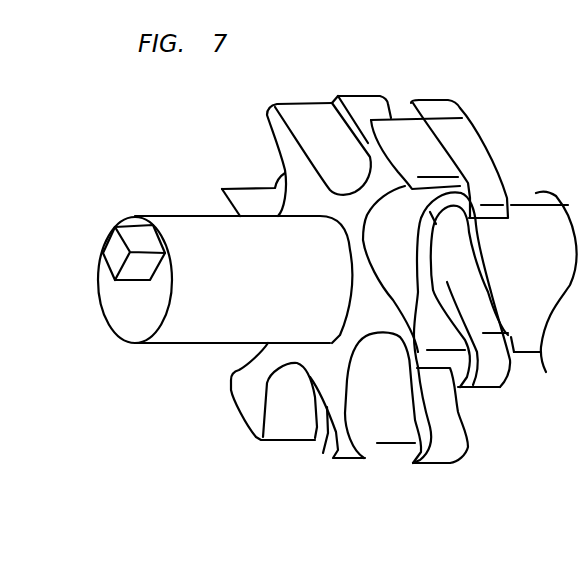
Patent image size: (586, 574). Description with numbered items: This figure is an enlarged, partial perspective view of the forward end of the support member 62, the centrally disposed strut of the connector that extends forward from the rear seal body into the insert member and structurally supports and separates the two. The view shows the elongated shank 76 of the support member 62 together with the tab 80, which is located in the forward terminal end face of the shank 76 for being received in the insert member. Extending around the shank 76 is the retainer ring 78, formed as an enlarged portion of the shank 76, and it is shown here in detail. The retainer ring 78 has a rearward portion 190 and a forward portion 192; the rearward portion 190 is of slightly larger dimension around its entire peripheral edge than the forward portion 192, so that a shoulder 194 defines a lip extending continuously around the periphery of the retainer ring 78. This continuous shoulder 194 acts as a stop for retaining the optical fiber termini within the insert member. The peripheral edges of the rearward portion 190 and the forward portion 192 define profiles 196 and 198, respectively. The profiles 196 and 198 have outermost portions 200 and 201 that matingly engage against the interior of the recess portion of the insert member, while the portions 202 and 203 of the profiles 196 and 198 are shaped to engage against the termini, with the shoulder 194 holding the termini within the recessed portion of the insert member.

The support member 62 is at (186, 215).
The shank 76 is at (536, 193).
The retainer ring 78 is at (338, 96).
The tab 80 is at (108, 254).
The rearward portion 190 is at (495, 370).
The forward portion 192 is at (386, 445).
The shoulder 194 is at (450, 300).
The profile 196 is at (466, 118).
The profile 198 is at (398, 114).
The outermost portion 200 is at (247, 427).
The outermost portion 201 is at (521, 200).
The portion 202 is at (380, 230).
The portion 203 is at (450, 228).